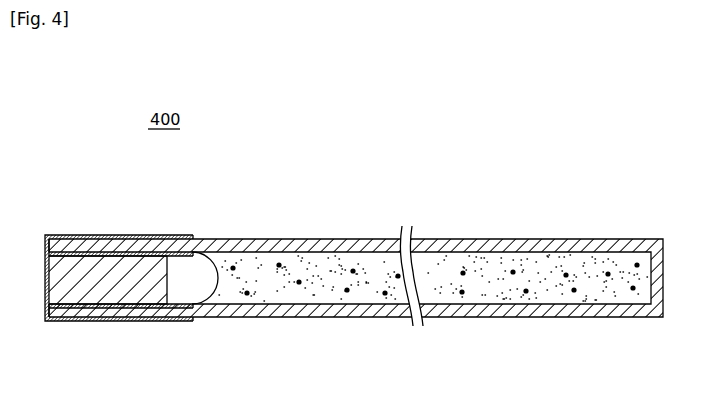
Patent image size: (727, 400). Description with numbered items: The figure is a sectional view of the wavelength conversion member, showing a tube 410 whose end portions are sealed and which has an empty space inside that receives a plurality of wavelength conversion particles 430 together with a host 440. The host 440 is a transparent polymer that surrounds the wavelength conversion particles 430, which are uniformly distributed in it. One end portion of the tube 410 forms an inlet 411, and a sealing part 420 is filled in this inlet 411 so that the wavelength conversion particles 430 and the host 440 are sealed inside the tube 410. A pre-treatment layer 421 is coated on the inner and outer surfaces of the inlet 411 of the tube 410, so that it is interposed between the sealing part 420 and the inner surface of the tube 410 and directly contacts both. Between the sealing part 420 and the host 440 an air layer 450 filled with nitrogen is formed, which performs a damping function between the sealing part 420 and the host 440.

The tube 410 is at (365, 312).
The inlet 411 is at (86, 240).
The sealing part 420 is at (50, 290).
The pre-treatment layer 421 is at (126, 238).
The wavelength conversion particles 430 is at (299, 285).
The host 440 is at (233, 292).
The air layer 450 is at (193, 268).